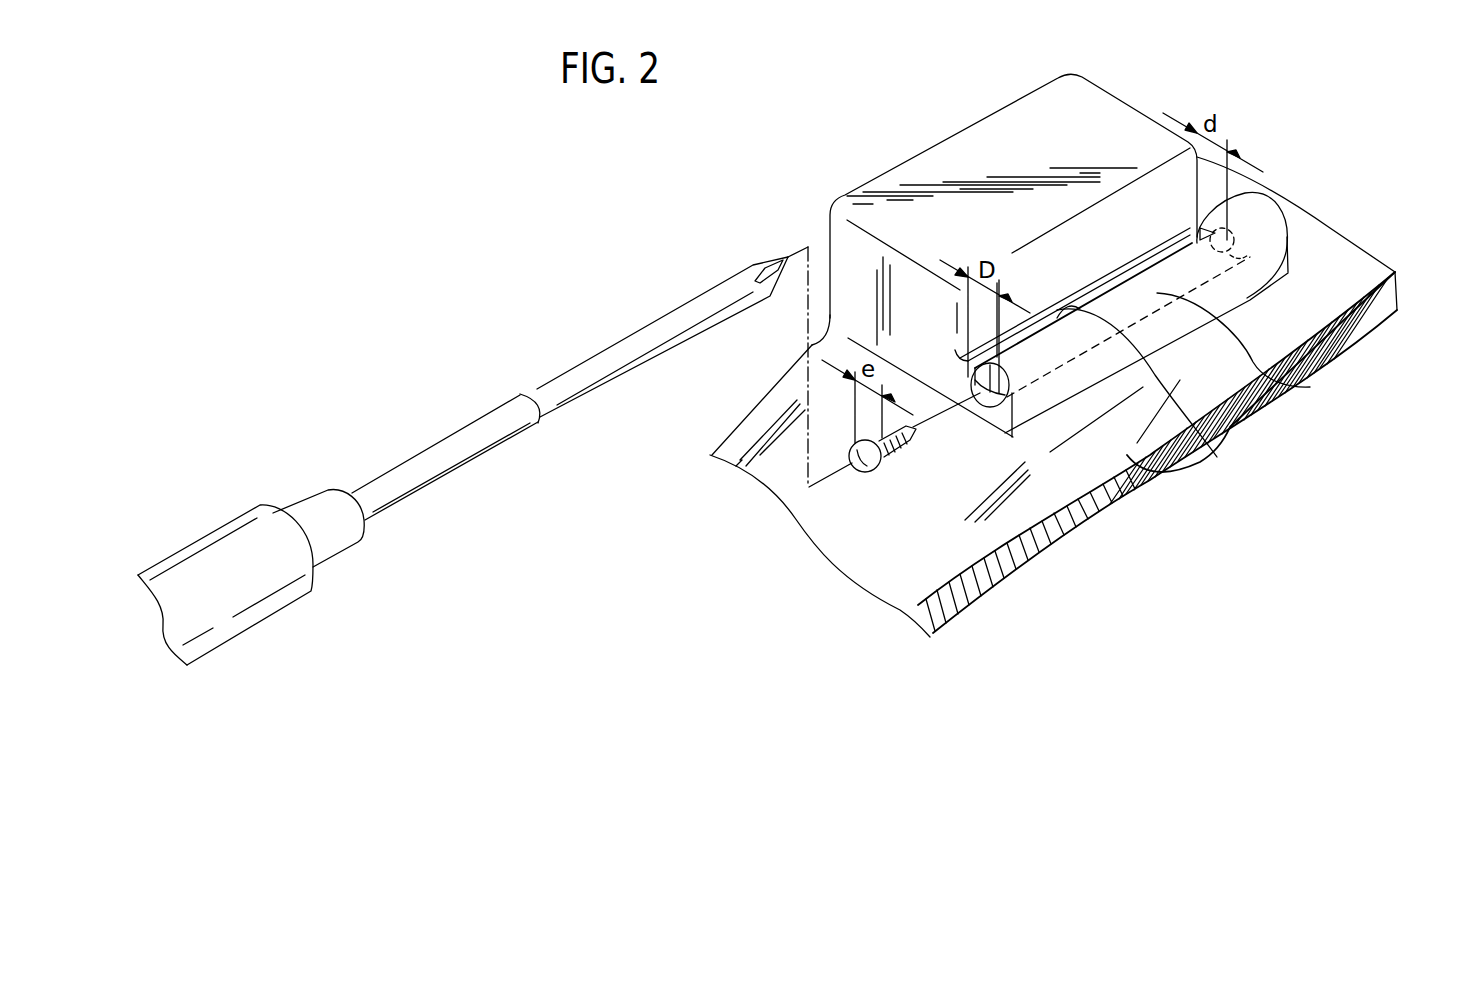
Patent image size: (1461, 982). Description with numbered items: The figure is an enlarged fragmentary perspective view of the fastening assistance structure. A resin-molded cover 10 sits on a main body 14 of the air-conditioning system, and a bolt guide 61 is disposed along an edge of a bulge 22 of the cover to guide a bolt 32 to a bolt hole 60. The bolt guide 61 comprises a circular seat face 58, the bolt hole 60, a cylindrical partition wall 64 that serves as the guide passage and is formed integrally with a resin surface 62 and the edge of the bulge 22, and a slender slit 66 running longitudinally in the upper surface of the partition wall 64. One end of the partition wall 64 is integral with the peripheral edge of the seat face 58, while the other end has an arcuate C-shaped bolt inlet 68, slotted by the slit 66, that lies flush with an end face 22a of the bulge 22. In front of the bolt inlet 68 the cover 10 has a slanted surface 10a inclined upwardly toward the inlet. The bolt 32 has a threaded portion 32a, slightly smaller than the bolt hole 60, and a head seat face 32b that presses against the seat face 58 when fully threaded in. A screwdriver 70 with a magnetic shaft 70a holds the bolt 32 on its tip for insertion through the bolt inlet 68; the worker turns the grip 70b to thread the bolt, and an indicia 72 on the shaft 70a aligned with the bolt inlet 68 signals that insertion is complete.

The resin-molded cover 10 is at (810, 131).
The slanted surface 10a is at (743, 427).
The main body 14 is at (1334, 229).
The bulge 22 is at (984, 130).
The end face of the bulge 22a is at (850, 250).
The bolt 32 is at (901, 477).
The threaded portion 32a is at (900, 445).
The head seat face 32b is at (882, 465).
The seat face 58 is at (1205, 268).
The bolt hole 60 is at (1200, 250).
The bolt guide 61 is at (1423, 393).
The resin surface 62 is at (1063, 450).
The cylindrical partition wall 64 is at (1310, 387).
The slit 66 is at (1250, 425).
The bolt inlet 68 is at (1190, 455).
The screwdriver 70 is at (463, 461).
The magnetic shaft 70a is at (610, 347).
The grip 70b is at (223, 540).
The indicia 72 is at (520, 397).